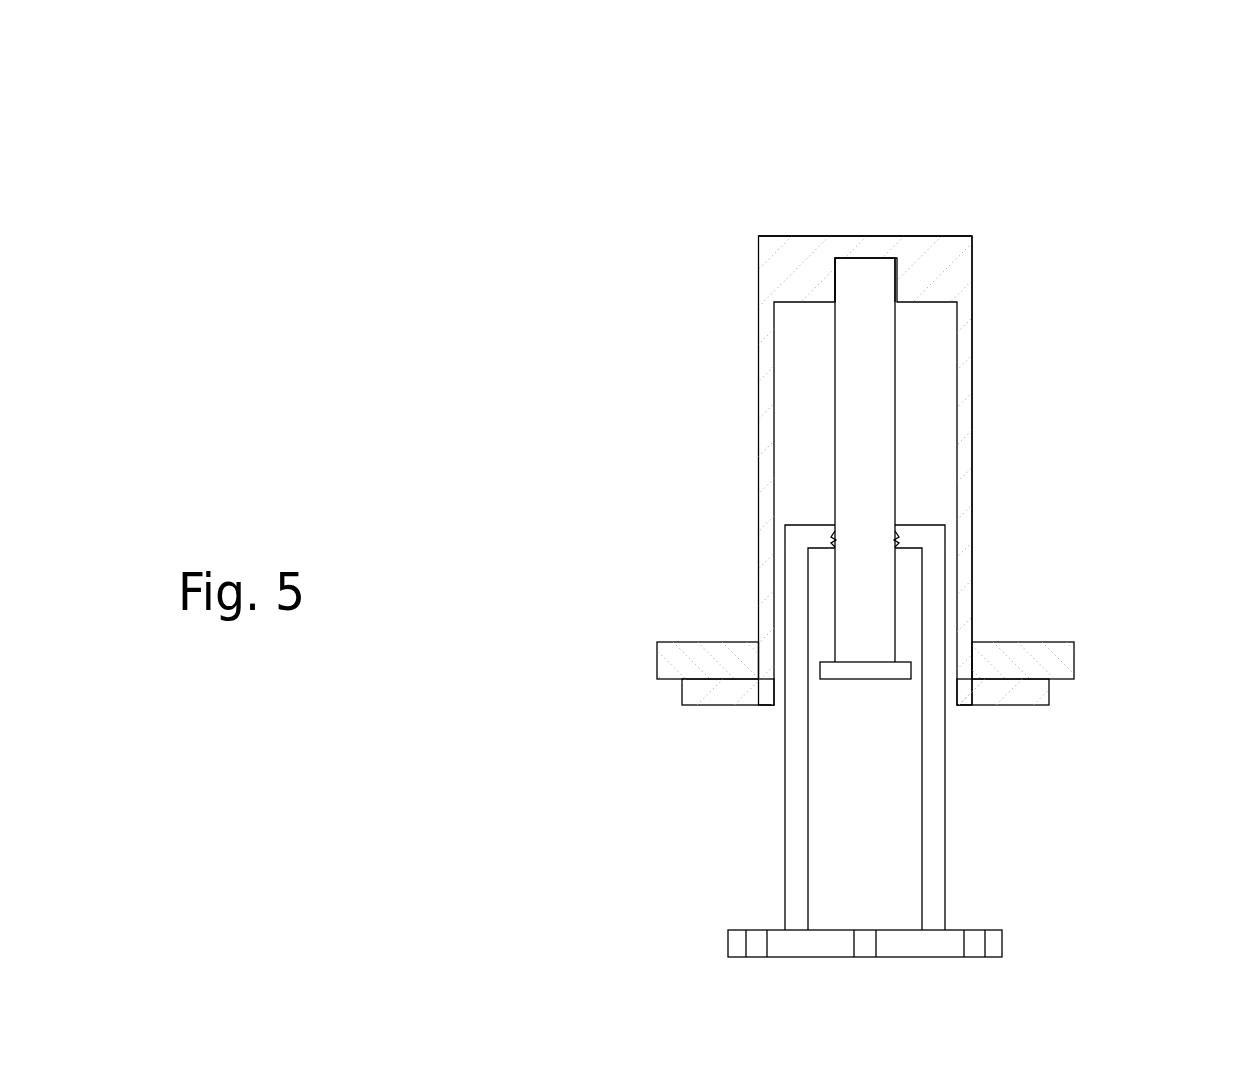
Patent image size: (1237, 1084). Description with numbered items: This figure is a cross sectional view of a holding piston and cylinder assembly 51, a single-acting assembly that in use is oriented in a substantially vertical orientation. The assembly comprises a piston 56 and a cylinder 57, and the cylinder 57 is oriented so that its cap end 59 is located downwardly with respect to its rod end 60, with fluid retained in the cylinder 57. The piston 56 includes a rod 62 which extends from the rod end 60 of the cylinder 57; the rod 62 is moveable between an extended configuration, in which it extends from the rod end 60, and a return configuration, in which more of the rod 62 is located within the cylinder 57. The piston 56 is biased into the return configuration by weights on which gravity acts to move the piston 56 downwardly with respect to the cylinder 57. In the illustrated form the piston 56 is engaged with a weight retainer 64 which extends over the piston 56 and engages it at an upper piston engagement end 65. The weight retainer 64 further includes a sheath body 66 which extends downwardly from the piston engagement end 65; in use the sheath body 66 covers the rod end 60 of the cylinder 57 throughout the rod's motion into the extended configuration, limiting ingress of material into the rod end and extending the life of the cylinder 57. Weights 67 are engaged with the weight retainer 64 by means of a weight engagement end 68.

The holding piston and cylinder assembly 51 is at (572, 225).
The piston 56 is at (869, 287).
The cylinder 57 is at (947, 793).
The cap end 59 is at (948, 912).
The rod end 60 is at (902, 542).
The rod 62 is at (862, 420).
The weight retainer 64 is at (978, 322).
The piston engagement end 65 is at (972, 237).
The sheath body 66 is at (967, 452).
The weights 67 is at (667, 655).
The weight engagement end 68 is at (695, 698).